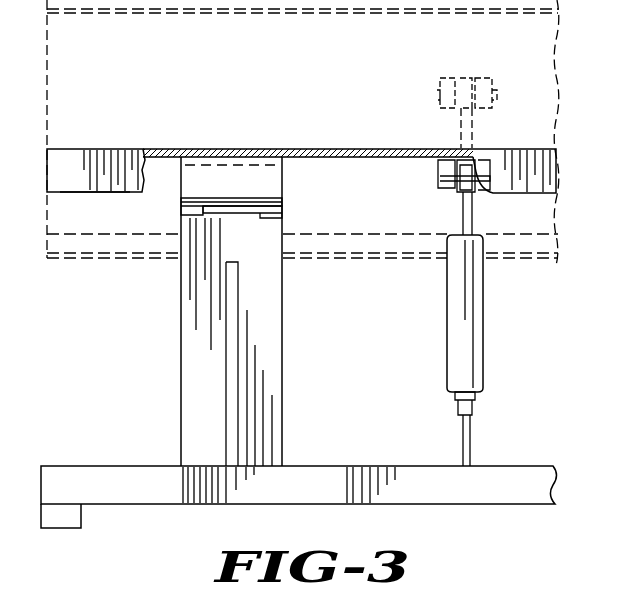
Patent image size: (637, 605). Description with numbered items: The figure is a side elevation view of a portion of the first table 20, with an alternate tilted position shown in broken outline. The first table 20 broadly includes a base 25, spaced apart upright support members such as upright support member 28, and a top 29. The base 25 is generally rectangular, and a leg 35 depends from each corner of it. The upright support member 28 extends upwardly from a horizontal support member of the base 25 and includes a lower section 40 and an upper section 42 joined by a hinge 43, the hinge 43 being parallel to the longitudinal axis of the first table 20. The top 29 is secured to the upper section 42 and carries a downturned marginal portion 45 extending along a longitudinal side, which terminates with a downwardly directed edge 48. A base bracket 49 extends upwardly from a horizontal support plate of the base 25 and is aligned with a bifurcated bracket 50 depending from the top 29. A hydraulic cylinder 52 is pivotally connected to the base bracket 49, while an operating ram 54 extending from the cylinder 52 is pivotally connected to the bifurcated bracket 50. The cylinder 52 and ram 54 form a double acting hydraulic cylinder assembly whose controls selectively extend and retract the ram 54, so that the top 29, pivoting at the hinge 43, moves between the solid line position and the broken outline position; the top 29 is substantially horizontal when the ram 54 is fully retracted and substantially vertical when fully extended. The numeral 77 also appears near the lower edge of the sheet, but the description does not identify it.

The first table 20 is at (78, 458).
The base 25 is at (128, 497).
The upright support member 28 is at (181, 345).
The top 29 is at (46, 84).
The leg 35 is at (62, 528).
The lower section 40 is at (283, 392).
The upper section 42 is at (284, 182).
The hinge 43 is at (284, 210).
The downturned marginal portion 45 is at (47, 177).
The downwardly directed edge 48 is at (82, 193).
The base bracket 49 is at (463, 437).
The bifurcated bracket 50 is at (438, 177).
The hydraulic cylinder 52 is at (447, 345).
The operating ram 54 is at (476, 215).
The adjacent figure element 77 is at (468, 604).